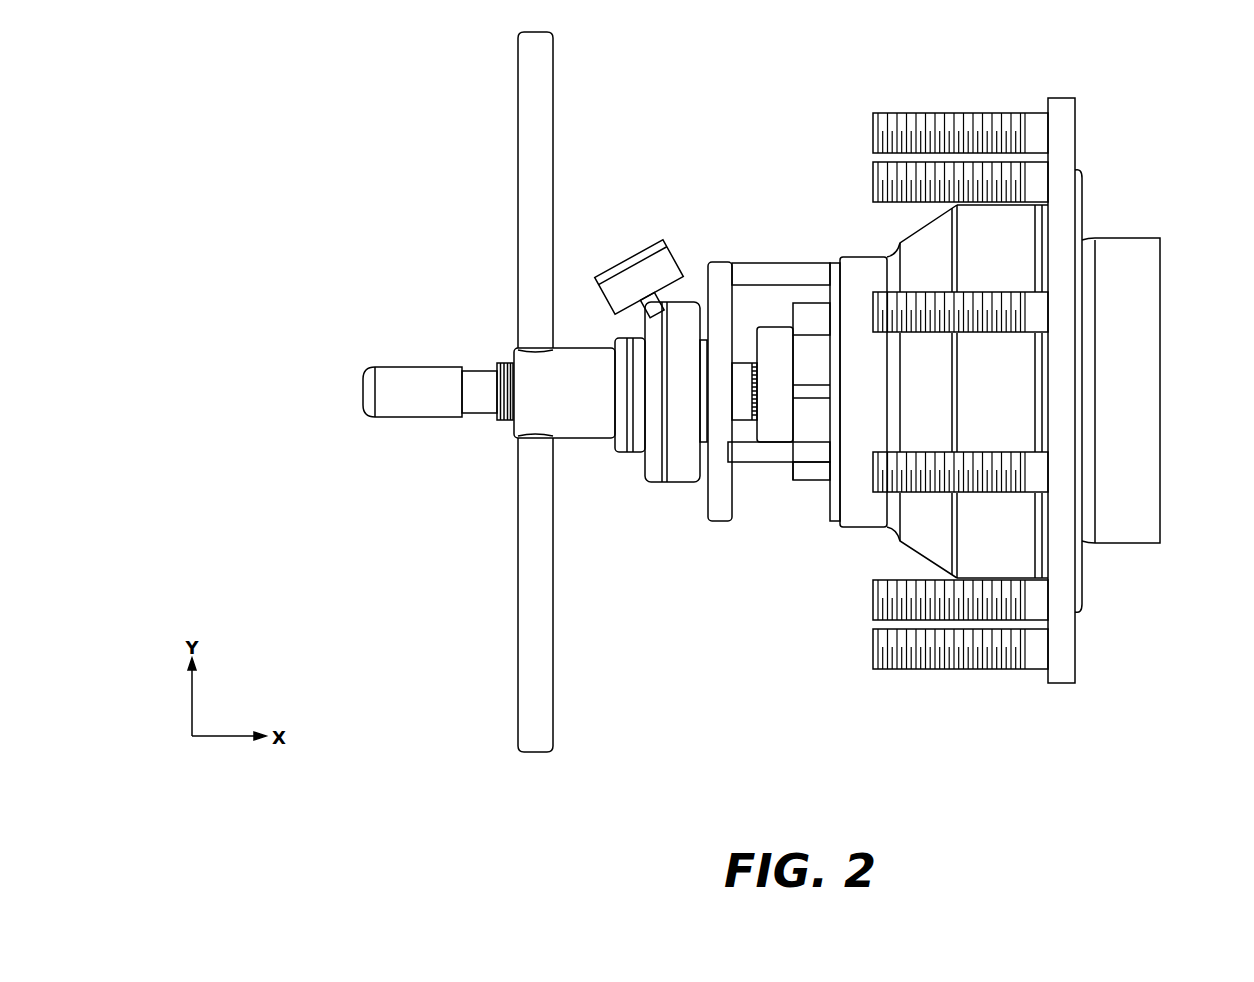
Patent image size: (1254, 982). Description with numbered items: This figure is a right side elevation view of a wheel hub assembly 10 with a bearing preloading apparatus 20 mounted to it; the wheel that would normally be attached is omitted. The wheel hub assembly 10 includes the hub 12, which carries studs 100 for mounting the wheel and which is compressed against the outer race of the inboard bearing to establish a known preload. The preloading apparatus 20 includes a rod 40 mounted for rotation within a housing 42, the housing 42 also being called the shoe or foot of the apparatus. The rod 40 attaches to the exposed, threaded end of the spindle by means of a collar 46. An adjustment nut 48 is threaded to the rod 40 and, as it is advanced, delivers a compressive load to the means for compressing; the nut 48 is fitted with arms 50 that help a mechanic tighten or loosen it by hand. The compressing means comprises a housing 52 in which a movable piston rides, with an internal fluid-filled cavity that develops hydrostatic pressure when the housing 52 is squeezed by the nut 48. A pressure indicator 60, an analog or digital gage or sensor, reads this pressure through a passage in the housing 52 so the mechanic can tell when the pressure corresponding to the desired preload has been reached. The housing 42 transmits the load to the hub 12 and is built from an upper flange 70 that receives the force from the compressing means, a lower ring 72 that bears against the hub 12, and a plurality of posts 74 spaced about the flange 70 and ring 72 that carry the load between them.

The wheel hub assembly 10 is at (804, 108).
The hub 12 is at (853, 524).
The bearing preloading apparatus 20 is at (736, 559).
The rod 40 is at (402, 378).
The housing 42 is at (804, 208).
The collar 46 is at (777, 332).
The adjustment nut 48 is at (583, 432).
The arms 50 is at (525, 213).
The housing 52 is at (684, 312).
The pressure indicator 60 is at (612, 266).
The upper flange 70 is at (712, 503).
The ring 72 is at (836, 268).
The posts 74 is at (766, 456).
The stud 100 is at (931, 120).